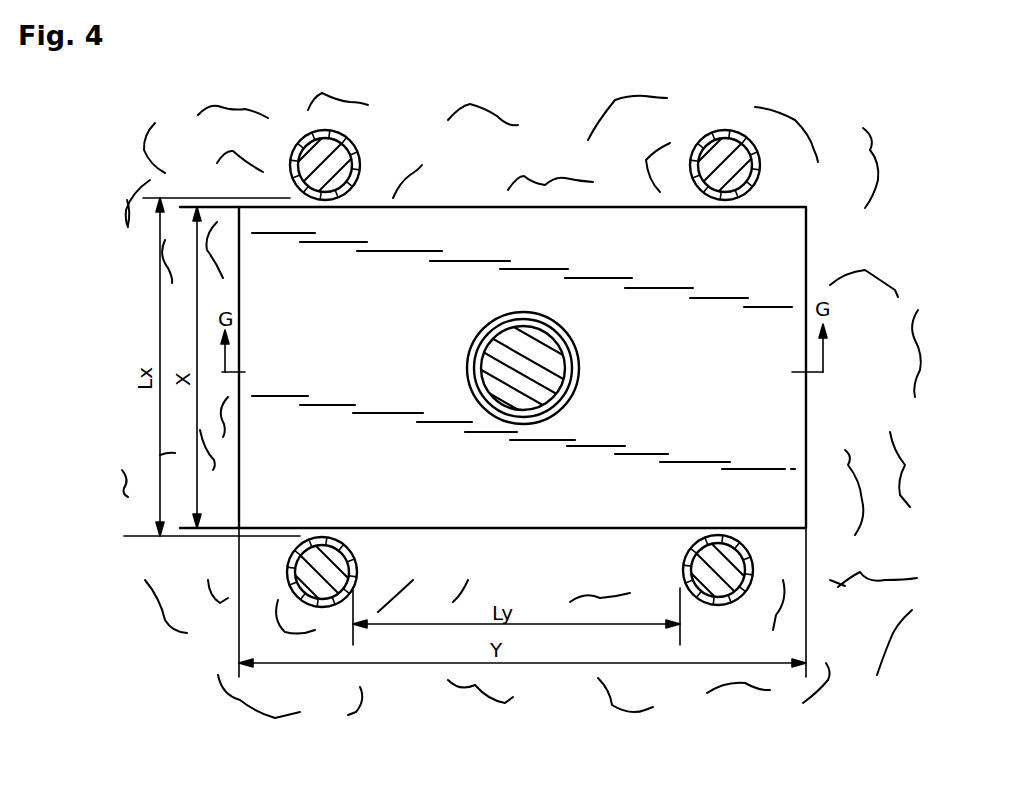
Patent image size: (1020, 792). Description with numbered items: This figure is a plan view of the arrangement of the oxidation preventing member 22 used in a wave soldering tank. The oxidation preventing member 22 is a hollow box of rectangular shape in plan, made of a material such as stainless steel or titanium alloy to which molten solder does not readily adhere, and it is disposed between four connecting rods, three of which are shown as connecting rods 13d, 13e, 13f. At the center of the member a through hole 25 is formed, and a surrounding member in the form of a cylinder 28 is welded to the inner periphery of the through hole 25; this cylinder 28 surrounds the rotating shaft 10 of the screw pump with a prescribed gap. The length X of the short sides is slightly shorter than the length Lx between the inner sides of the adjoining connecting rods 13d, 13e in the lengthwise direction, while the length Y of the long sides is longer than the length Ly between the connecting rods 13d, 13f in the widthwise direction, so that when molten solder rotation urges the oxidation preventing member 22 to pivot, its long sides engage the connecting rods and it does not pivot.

The rotating shaft 10 is at (500, 362).
The connecting rod 13d is at (357, 563).
The connecting rod 13e is at (359, 150).
The connecting rod 13f is at (687, 558).
The oxidation preventing member 22 is at (744, 423).
The through hole 25 is at (578, 387).
The cylinder 28 is at (574, 345).